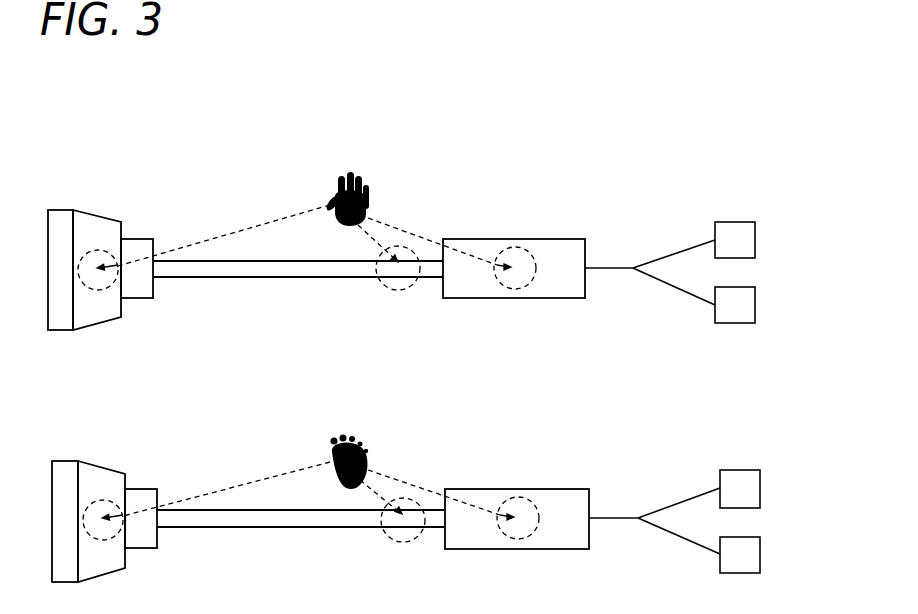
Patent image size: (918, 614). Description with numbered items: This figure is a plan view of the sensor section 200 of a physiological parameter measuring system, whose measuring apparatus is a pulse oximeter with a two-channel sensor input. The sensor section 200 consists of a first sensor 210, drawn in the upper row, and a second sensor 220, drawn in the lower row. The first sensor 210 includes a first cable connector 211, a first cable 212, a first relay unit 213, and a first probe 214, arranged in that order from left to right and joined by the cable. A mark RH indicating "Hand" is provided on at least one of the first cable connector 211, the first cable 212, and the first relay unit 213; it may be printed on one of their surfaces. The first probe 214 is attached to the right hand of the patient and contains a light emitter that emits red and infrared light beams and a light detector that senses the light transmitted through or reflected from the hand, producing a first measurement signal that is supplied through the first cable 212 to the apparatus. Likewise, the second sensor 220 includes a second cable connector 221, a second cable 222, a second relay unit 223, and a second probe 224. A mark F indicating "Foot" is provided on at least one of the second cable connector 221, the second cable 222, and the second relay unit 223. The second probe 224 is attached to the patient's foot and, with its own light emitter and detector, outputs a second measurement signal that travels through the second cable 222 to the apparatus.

The sensor section 200 is at (132, 92).
The first sensor 210 is at (443, 209).
The first cable connector 211 is at (93, 210).
The first cable 212 is at (302, 278).
The first relay unit 213 is at (512, 239).
The first probe 214 is at (708, 212).
The second sensor 220 is at (444, 462).
The second cable connector 221 is at (102, 461).
The second cable 222 is at (292, 528).
The second relay unit 223 is at (512, 489).
The second probe 224 is at (708, 464).
The mark of Hand RH is at (353, 173).
The mark of Foot F is at (348, 435).